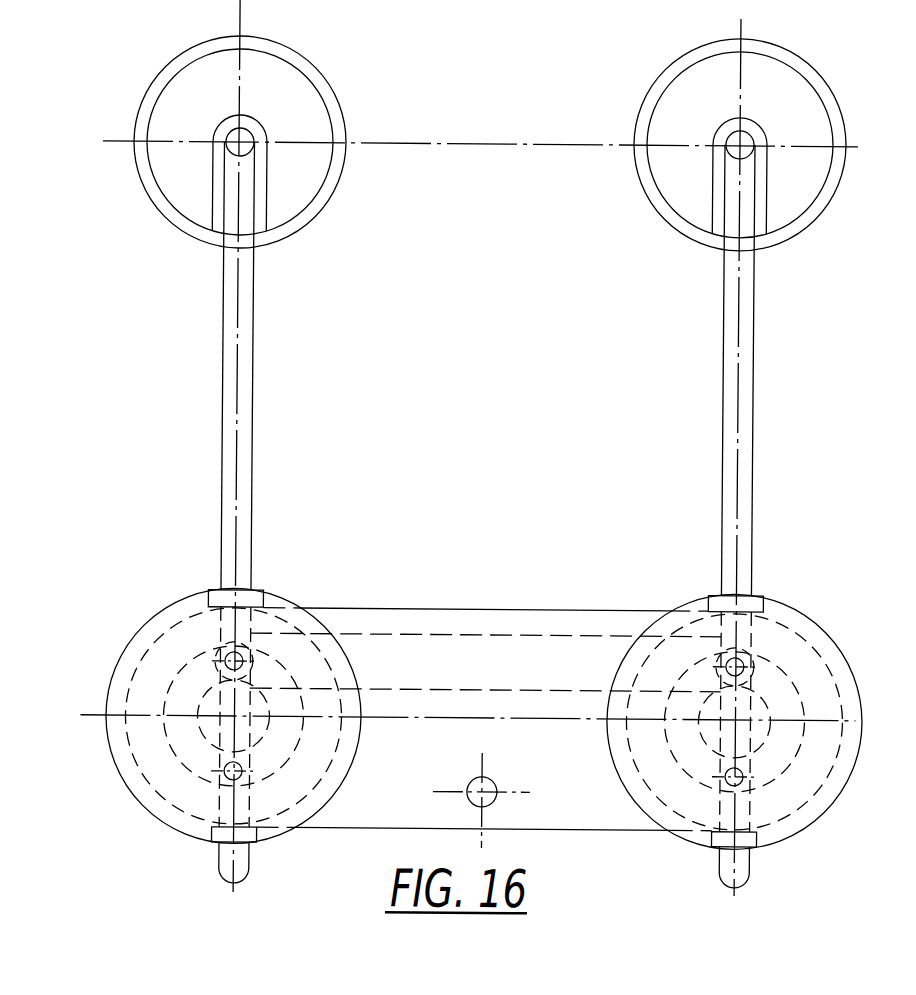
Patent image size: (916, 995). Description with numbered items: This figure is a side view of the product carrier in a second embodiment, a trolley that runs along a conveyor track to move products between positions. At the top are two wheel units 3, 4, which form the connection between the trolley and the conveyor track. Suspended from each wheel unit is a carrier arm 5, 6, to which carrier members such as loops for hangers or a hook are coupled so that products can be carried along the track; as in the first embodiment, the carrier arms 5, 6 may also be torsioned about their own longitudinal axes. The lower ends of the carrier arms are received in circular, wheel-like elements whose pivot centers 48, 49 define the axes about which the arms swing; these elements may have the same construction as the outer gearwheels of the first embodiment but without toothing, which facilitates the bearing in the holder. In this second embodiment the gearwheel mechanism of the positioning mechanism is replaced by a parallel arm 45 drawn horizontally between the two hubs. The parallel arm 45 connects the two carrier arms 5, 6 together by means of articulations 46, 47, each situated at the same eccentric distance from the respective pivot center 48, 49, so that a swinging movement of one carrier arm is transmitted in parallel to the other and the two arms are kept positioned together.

The wheel unit 3 is at (292, 258).
The wheel unit 4 is at (679, 249).
The carrier arm 5 is at (246, 471).
The carrier arm 6 is at (730, 447).
The parallel arm 45 is at (496, 656).
The articulation 46 is at (245, 652).
The articulation 47 is at (756, 643).
The pivot center 48 is at (237, 716).
The pivot center 49 is at (739, 718).